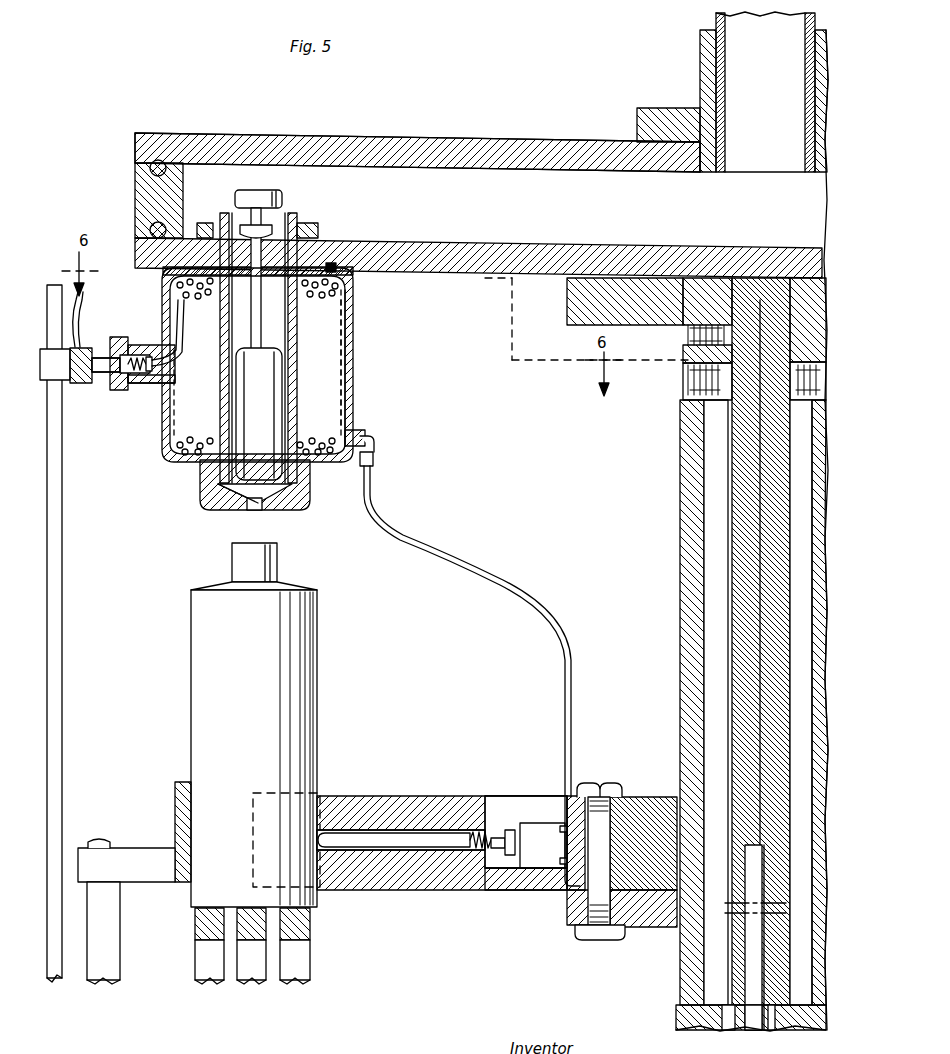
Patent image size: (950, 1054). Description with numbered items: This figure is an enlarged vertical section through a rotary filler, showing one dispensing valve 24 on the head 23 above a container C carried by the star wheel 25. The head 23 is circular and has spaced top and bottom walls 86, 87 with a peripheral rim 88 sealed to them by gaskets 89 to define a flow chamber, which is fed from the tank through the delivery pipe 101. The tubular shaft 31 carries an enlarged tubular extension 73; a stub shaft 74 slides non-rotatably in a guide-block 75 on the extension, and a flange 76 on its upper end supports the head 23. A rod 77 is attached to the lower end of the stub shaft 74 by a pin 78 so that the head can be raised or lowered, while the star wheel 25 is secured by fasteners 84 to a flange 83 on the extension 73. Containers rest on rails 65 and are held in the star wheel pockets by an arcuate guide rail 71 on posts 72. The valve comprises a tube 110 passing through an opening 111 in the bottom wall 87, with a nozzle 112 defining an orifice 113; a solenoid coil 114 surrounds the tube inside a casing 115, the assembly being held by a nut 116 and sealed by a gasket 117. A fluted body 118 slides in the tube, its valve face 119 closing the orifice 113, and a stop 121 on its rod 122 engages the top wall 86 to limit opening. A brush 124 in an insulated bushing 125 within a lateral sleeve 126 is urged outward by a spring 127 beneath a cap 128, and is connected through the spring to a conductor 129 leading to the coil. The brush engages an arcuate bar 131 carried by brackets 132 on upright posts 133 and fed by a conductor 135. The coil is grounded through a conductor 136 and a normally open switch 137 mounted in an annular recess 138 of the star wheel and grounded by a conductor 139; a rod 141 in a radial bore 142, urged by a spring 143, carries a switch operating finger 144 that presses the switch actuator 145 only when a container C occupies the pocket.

The head 23 is at (516, 135).
The dispensing valve 24 is at (356, 368).
The star wheel 25 is at (418, 790).
The shaft 31 is at (792, 1010).
The rails 65 is at (302, 930).
The arcuate guide rail 71 is at (175, 812).
The posts 72 is at (108, 926).
The tubular extension 73 is at (732, 520).
The stub shaft 74 is at (735, 555).
The guide-block 75 is at (700, 415).
The flange 76 is at (583, 313).
The rod 77 is at (752, 968).
The pin 78 is at (732, 905).
The flange 83 is at (648, 912).
The fasteners 84 is at (603, 782).
The top wall 86 is at (398, 140).
The bottom wall 87 is at (402, 245).
The peripheral rim 88 is at (183, 200).
The gaskets 89 is at (162, 163).
The delivery pipe 101 is at (721, 70).
The tube 110 is at (297, 222).
The opening 111 is at (305, 265).
The nozzle 112 is at (302, 494).
The orifice 113 is at (258, 506).
The solenoid coil 114 is at (342, 412).
The casing 115 is at (354, 334).
The nut 116 is at (318, 228).
The gasket 117 is at (338, 268).
The fluted body 118 is at (270, 362).
The valve face 119 is at (236, 498).
The stop 121 is at (280, 195).
The rod 122 is at (262, 310).
The brush 124 is at (100, 358).
The insulated bushing 125 is at (138, 392).
The lateral sleeve 126 is at (160, 384).
The spring 127 is at (138, 356).
The cap 128 is at (112, 375).
The conductor 129 is at (180, 355).
The arcuate bar 131 is at (82, 385).
The brackets 132 is at (55, 390).
The upright posts 133 is at (62, 608).
The conductor 135 is at (82, 310).
The conductor 136 is at (430, 558).
The switch 137 is at (542, 822).
The annular recess 138 is at (490, 795).
The conductor 139 is at (560, 888).
The rod 141 is at (368, 848).
The bore 142 is at (348, 828).
The spring 143 is at (468, 830).
The switch operating finger 144 is at (498, 875).
The switch actuator 145 is at (510, 828).
The container C is at (303, 690).